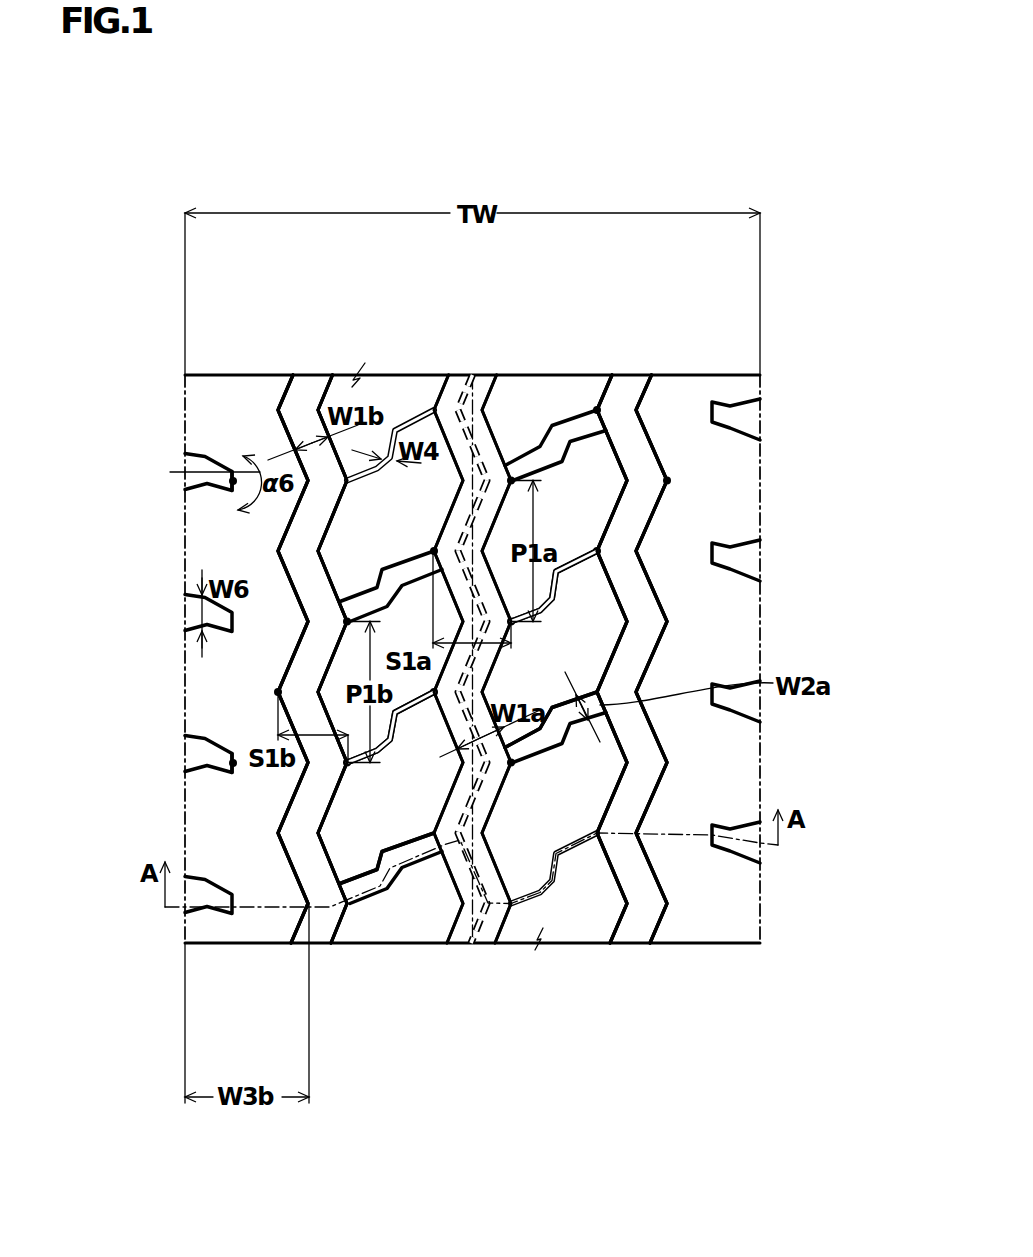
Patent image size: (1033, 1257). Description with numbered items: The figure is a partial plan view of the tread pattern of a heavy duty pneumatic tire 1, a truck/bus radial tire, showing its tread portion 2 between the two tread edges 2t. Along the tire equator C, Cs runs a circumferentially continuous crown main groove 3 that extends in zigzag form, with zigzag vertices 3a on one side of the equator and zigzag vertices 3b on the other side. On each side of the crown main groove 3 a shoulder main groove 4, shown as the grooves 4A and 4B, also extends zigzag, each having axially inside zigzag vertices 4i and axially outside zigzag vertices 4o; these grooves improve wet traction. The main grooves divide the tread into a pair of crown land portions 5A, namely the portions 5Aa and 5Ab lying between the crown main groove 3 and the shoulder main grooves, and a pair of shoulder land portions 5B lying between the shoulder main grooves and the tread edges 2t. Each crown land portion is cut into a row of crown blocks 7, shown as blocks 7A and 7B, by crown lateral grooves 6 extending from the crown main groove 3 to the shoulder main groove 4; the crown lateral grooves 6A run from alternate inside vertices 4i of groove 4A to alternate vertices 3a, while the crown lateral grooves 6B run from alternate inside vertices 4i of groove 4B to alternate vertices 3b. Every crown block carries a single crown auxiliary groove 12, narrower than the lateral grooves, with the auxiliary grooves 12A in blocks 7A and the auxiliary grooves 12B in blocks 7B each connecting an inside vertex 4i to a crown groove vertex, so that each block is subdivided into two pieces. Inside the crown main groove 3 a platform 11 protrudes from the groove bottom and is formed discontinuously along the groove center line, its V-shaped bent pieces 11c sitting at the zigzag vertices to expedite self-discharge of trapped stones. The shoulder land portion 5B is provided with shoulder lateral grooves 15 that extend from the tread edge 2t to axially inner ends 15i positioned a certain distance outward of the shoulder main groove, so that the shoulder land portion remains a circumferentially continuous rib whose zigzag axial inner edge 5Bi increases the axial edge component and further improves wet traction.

The heavy duty pneumatic tire 1 is at (485, 579).
The tread portion 2 is at (473, 615).
The tread edge 2t is at (185, 400).
The crown main groove 3 is at (472, 680).
The zigzag vertex of crown main groove 3a is at (505, 458).
The zigzag vertex of crown main groove 3b is at (433, 552).
The shoulder main groove 4 is at (473, 615).
The shoulder main groove 4A is at (615, 418).
The shoulder main groove 4B is at (305, 415).
The axially inside zigzag vertex 4i is at (597, 410).
The axially outside zigzag vertex 4o is at (668, 481).
The crown land portion 5A is at (472, 708).
The crown land portion 5Aa is at (577, 913).
The crown land portion 5Ab is at (407, 917).
The shoulder land portion 5B is at (472, 723).
The axial inner edge of shoulder land portion 5Bi is at (246, 915).
The crown lateral groove 6 is at (472, 709).
The crown lateral groove 6A is at (570, 430).
The crown lateral groove 6B is at (380, 602).
The crown block 7 is at (590, 779).
The crown block 7A is at (582, 622).
The crown block 7B is at (445, 918).
The platform 11 is at (503, 680).
The V-shaped bent piece 11c is at (500, 930).
The crown auxiliary groove 12 is at (472, 597).
The crown auxiliary groove 12A is at (562, 582).
The crown auxiliary groove 12B is at (398, 430).
The shoulder lateral groove 15 is at (473, 656).
The axially inner end of shoulder lateral groove 15i is at (233, 484).
The tire equator C is at (469, 641).
The tire equator Cs is at (472, 375).